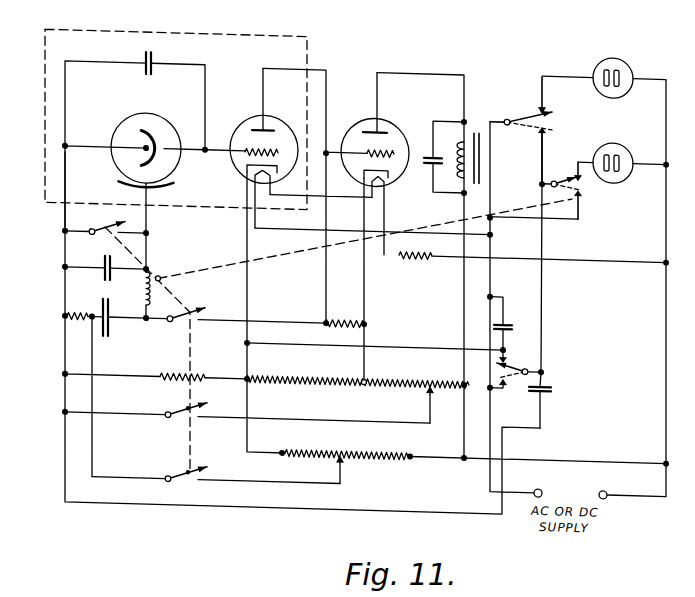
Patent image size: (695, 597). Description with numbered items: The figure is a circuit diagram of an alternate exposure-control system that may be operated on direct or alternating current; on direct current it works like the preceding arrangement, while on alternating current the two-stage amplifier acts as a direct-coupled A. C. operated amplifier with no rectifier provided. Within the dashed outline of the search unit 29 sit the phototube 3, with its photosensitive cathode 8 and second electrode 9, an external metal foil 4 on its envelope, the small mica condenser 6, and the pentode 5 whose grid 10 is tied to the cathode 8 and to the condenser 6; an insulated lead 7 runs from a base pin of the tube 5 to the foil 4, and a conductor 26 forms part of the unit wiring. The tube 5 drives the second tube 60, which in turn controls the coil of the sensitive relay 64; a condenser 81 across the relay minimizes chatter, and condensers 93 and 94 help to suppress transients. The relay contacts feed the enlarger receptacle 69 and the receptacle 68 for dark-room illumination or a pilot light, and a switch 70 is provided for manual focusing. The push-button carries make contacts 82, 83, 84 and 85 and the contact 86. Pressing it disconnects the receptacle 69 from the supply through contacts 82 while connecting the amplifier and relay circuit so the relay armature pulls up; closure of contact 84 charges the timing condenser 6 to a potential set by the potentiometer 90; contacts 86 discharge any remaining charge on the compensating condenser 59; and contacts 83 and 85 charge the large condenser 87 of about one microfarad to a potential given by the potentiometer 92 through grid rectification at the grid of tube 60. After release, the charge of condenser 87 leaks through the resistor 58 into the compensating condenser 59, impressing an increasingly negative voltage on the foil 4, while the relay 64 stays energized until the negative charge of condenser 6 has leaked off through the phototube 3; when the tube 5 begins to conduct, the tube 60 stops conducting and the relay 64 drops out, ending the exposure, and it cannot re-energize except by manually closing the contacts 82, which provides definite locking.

The phototube 3 is at (168, 112).
The metal foil 4 is at (123, 178).
The pentode 5 is at (247, 115).
The mica condenser 6 is at (152, 57).
The insulated lead 7 is at (147, 217).
The photosensitive cathode 8 is at (160, 130).
The electrode 9 is at (143, 142).
The grid 10 is at (220, 146).
The conductor 26 is at (67, 184).
The search unit 29 is at (44, 169).
The resistor 58 is at (142, 296).
The compensating condenser 59 is at (103, 259).
The tube 60 is at (357, 114).
The sensitive relay 64 is at (506, 104).
The receptacle 68 is at (608, 82).
The enlarger receptacle 69 is at (607, 167).
The switch 70 is at (516, 354).
The condenser 81 is at (429, 143).
The push-button contacts 82 is at (571, 163).
The make contact 83 is at (204, 459).
The make contact 84 is at (200, 398).
The make contact 85 is at (196, 306).
The contact 86 is at (117, 221).
The large condenser 87 is at (111, 327).
The potentiometer 90 is at (387, 371).
The potentiometer 92 is at (355, 443).
The condenser 93 is at (549, 378).
The condenser 94 is at (510, 309).